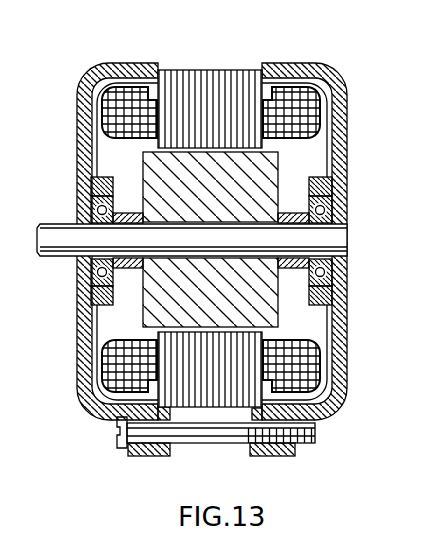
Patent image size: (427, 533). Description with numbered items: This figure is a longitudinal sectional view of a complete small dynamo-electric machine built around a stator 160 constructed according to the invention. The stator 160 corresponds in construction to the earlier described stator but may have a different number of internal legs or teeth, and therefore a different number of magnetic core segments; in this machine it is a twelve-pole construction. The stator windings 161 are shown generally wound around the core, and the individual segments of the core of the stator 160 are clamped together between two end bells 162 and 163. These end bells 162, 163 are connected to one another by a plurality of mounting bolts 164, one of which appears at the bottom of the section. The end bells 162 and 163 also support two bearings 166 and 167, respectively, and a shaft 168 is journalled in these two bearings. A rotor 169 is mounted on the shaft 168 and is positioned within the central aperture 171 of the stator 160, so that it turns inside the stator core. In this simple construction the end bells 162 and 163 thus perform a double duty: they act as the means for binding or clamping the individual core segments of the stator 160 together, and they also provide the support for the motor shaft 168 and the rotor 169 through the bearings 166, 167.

The stator 160 is at (212, 92).
The stator windings 161 is at (306, 92).
The end bell 162 is at (346, 109).
The end bell 163 is at (77, 133).
The mounting bolts 164 is at (200, 443).
The bearing 166 is at (334, 212).
The bearing 167 is at (88, 275).
The shaft 168 is at (62, 243).
The rotor 169 is at (228, 206).
The central aperture 171 is at (264, 146).